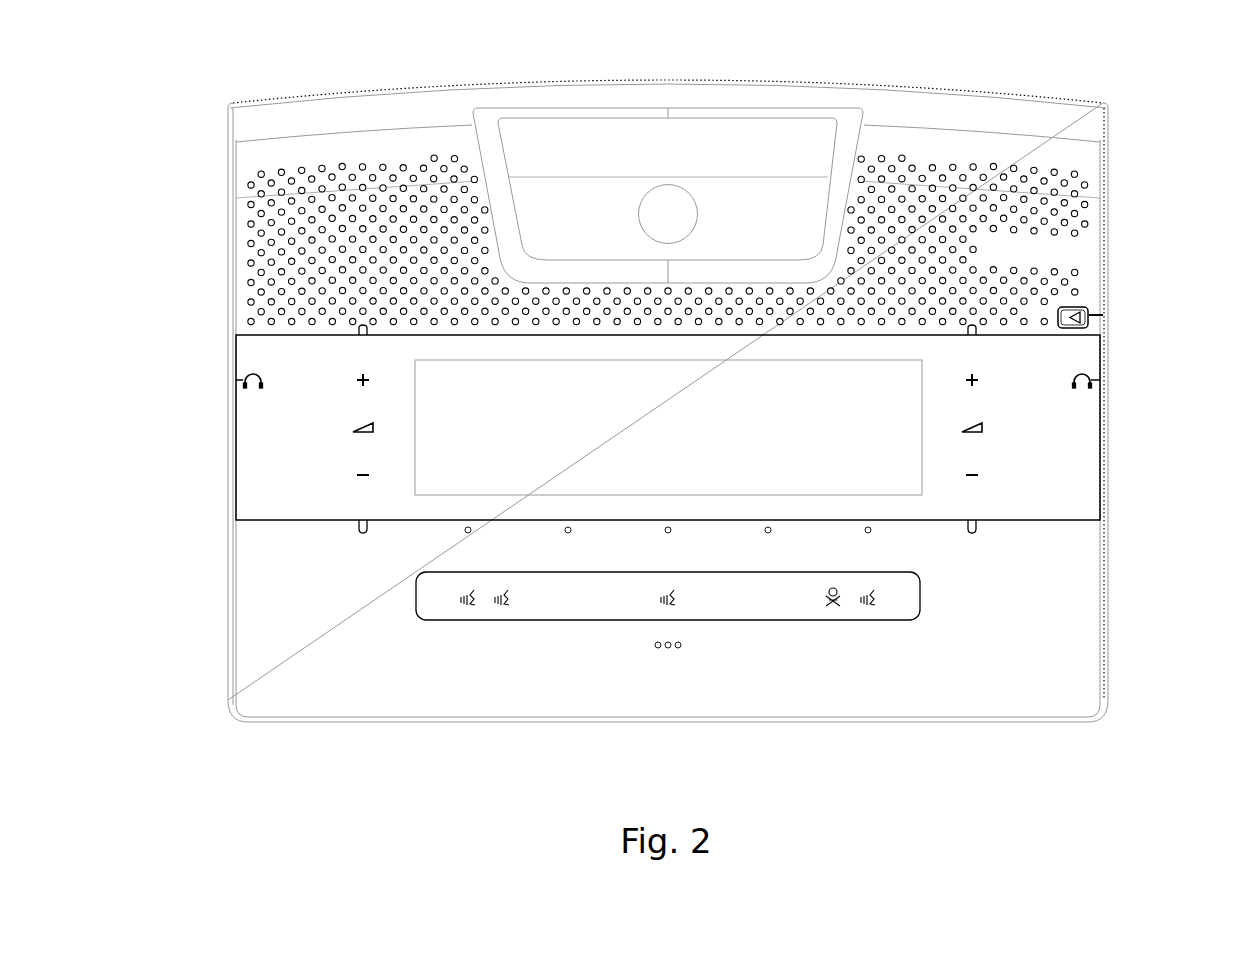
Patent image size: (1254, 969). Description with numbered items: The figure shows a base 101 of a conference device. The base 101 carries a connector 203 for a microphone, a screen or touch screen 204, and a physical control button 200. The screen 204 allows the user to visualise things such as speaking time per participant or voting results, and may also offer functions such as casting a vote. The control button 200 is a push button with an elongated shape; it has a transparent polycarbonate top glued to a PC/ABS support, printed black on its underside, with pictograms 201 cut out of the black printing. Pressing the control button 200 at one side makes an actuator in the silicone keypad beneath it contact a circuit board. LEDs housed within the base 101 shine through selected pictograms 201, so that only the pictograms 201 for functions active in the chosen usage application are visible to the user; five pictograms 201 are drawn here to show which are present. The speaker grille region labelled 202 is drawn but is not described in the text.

The base 101 is at (1125, 90).
The control button 200 is at (425, 600).
The pictograms 201 is at (503, 612).
The speaker grille 202 is at (272, 228).
The connector 203 is at (670, 205).
The screen or touch screen 204 is at (423, 393).